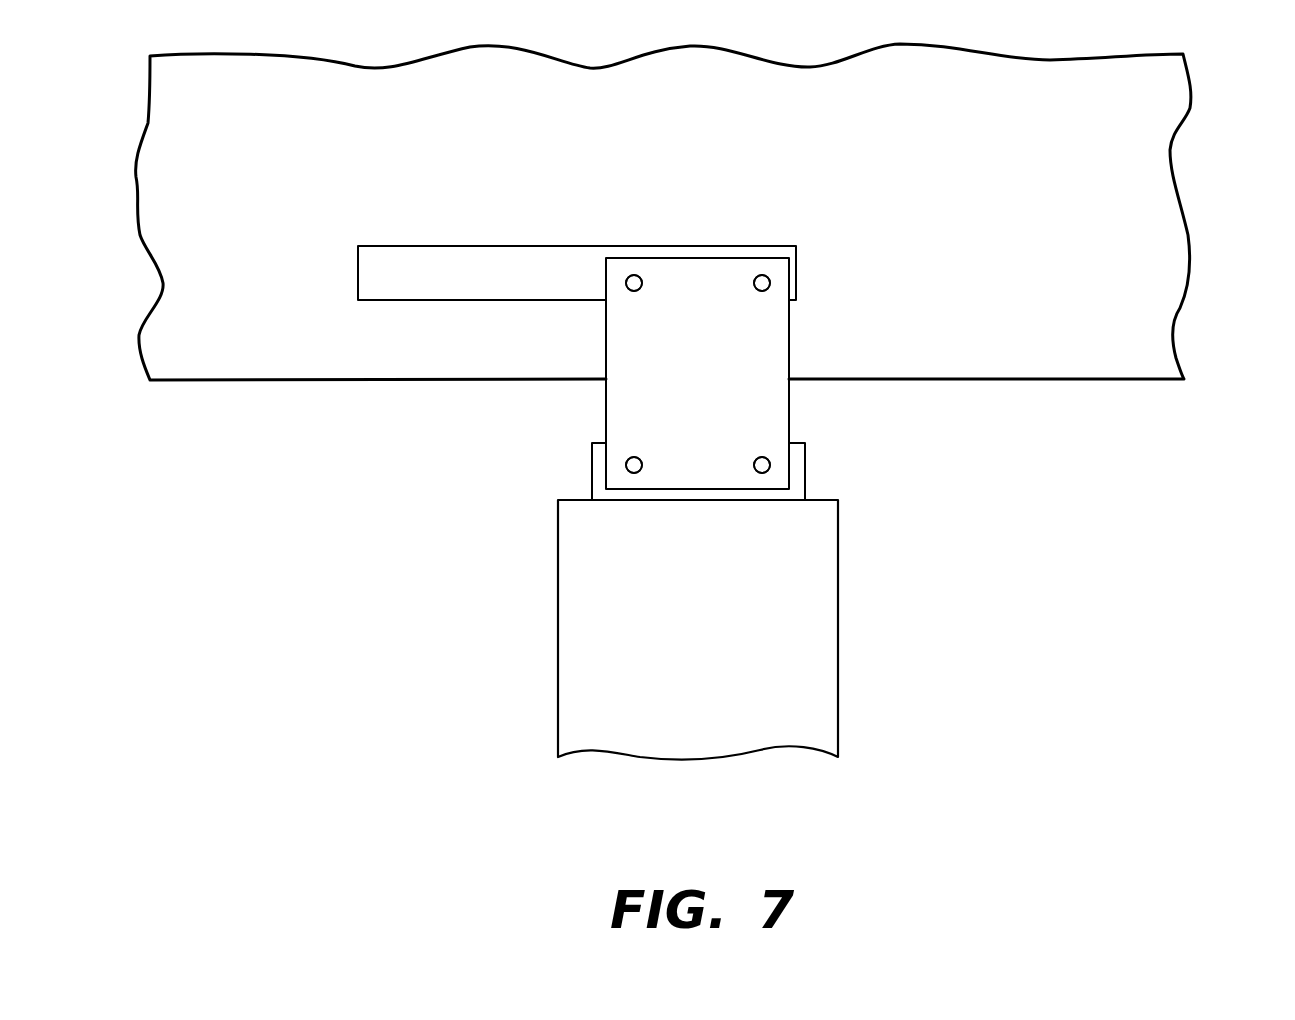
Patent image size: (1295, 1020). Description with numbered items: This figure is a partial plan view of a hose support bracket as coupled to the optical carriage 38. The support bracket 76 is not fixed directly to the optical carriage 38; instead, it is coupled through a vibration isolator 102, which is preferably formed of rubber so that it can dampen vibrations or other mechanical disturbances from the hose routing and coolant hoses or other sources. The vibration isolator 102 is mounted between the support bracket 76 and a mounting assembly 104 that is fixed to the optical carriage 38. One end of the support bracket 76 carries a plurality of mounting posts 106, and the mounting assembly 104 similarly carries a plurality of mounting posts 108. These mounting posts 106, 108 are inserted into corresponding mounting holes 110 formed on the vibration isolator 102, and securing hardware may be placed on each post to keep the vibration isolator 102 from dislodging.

The optical carriage 38 is at (1125, 148).
The mounting assembly 104 is at (472, 268).
The vibration isolator 102 is at (627, 408).
The mounting holes 110 is at (626, 283).
The mounting posts 108 is at (634, 291).
The mounting posts 106 is at (634, 473).
The support bracket 76 is at (813, 608).